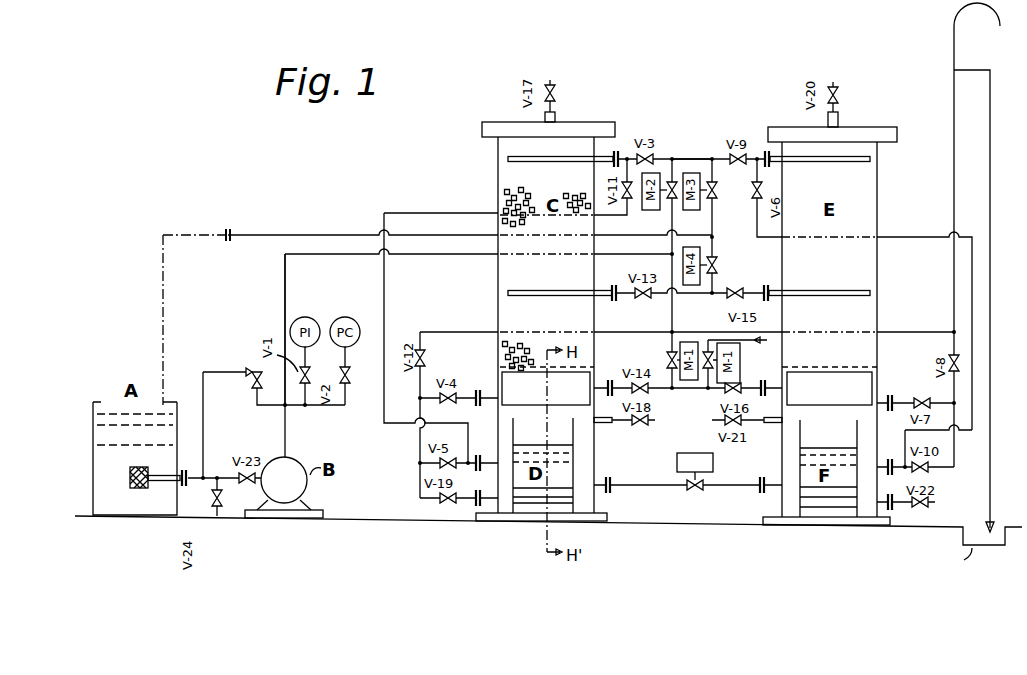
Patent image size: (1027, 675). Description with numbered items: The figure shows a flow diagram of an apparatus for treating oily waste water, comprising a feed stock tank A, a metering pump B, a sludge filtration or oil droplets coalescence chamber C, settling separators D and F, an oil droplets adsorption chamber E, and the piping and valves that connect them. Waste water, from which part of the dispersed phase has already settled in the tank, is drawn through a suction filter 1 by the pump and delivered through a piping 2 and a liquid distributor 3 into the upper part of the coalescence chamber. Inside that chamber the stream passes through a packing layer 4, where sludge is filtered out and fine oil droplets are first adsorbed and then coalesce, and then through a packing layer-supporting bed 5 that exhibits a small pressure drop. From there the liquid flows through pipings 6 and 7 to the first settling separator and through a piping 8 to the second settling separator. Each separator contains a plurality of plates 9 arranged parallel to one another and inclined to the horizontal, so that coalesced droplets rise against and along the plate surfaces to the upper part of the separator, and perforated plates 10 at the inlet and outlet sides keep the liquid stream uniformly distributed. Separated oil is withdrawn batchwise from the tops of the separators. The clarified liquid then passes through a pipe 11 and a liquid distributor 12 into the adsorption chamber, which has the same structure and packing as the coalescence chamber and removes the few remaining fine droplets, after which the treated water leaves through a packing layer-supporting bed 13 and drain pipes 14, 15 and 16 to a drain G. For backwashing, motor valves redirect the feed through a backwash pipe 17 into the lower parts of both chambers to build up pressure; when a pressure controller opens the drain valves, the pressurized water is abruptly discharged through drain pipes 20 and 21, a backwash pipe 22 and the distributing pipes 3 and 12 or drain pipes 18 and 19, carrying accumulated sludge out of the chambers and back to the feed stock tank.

The suction filter 1 is at (130, 490).
The piping 2 is at (285, 308).
The liquid distributor 3 is at (549, 156).
The packing layer 4 is at (524, 195).
The packing layer-supporting bed 5 is at (547, 386).
The piping 6 is at (480, 403).
The piping 7 is at (420, 455).
The piping 8 is at (663, 485).
The plates 9 is at (518, 445).
The perforated plates 10 is at (513, 447).
The pipe 11 is at (918, 237).
The liquid distributor 12 is at (812, 158).
The packing layer-supporting bed 13 is at (829, 386).
The drain pipe 14 is at (935, 398).
The drain pipe 15 is at (954, 288).
The drain pipe 16 is at (977, 267).
The backwash pipe 17 is at (666, 303).
The drain pipe 18 is at (548, 295).
The drain pipe 19 is at (826, 296).
The drain pipe 20 is at (690, 159).
The drain pipe 21 is at (690, 294).
The backwash pipe 22 is at (362, 235).